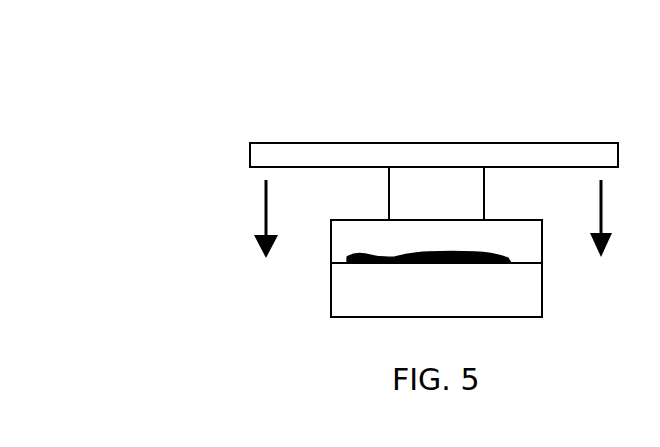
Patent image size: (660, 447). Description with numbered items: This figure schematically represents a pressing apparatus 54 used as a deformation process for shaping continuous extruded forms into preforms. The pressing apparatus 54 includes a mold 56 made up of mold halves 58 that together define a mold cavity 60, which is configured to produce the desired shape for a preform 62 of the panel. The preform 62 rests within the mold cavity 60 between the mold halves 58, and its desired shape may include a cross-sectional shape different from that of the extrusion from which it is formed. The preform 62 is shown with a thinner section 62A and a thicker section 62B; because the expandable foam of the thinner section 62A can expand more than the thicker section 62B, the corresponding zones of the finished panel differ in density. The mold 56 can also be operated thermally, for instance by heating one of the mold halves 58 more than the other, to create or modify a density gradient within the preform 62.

The pressing apparatus 54 is at (231, 102).
The mold 56 is at (327, 335).
The mold halves 58 is at (530, 287).
The mold cavity 60 is at (492, 252).
The preform 62 is at (402, 245).
The thinner section 62A is at (392, 265).
The thicker section 62B is at (455, 264).